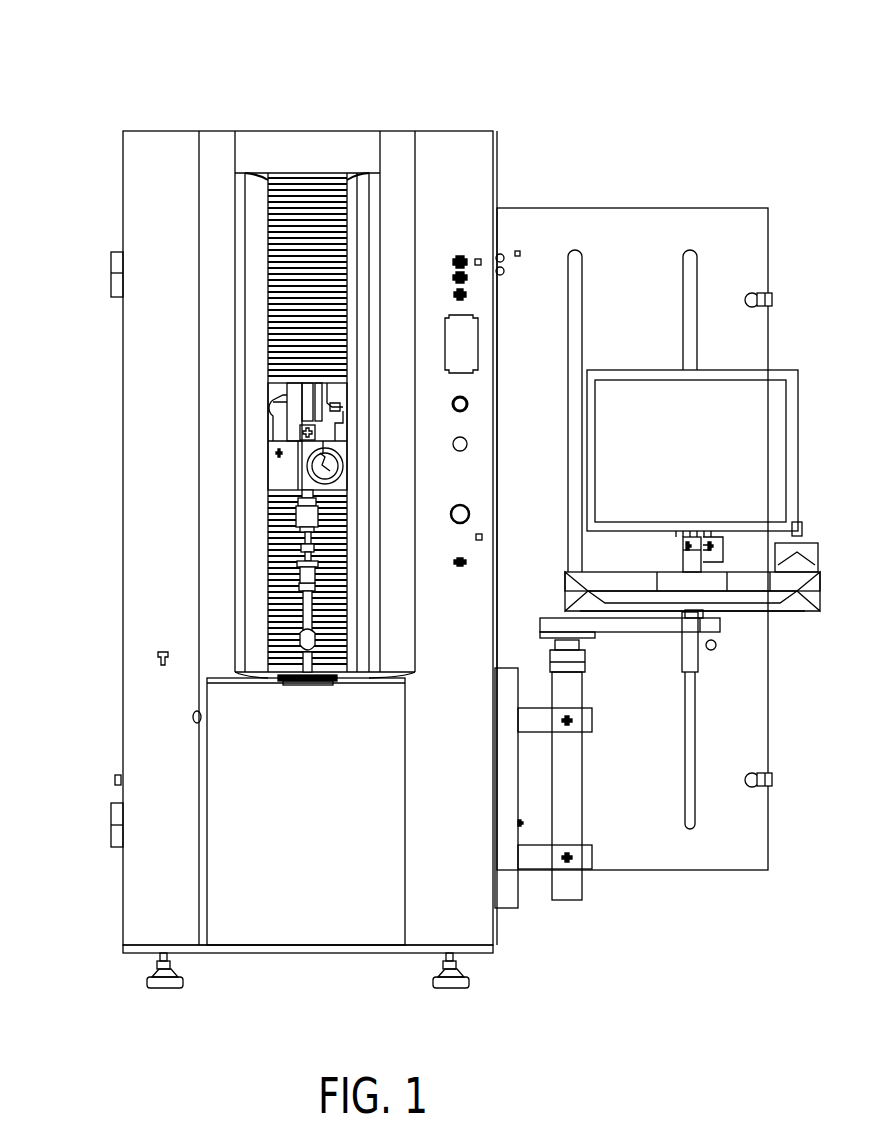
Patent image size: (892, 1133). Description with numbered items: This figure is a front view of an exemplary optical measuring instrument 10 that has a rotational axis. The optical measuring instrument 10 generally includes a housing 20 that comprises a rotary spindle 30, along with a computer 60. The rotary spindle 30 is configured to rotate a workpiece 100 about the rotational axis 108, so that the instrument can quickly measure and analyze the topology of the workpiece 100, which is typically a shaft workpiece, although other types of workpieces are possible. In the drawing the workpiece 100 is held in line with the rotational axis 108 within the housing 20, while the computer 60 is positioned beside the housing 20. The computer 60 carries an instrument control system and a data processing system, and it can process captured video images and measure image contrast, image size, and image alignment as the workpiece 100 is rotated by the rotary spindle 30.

The optical measuring instrument 10 is at (90, 82).
The housing 20 is at (123, 345).
The rotary spindle 30 is at (270, 496).
The workpiece 100 is at (270, 583).
The rotational axis 108 is at (308, 680).
The computer 60 is at (791, 367).